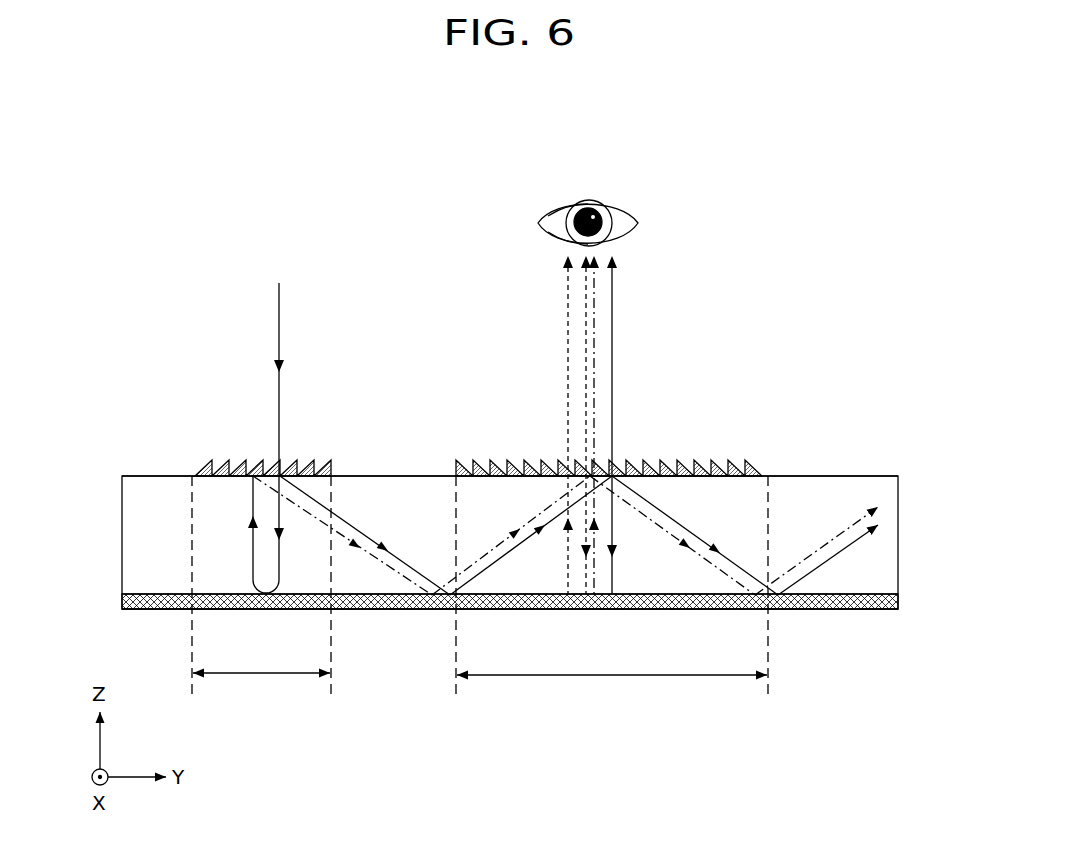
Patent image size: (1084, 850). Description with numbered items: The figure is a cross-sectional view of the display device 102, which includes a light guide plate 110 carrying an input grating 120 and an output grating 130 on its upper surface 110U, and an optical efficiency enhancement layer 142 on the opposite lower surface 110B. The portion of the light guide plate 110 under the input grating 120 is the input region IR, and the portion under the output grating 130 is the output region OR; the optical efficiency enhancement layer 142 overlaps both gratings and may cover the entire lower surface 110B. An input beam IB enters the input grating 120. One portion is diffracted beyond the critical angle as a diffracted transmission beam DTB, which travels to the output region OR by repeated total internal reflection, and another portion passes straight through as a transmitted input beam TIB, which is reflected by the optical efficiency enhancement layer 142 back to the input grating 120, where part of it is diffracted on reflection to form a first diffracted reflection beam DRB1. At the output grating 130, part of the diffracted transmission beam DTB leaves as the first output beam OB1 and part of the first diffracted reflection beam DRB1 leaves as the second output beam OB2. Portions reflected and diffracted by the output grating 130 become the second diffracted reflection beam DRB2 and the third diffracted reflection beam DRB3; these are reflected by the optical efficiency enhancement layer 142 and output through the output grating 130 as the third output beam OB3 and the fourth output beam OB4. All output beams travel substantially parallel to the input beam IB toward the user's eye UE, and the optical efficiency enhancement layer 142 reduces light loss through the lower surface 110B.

The display device 102 is at (810, 157).
The light guide plate 110 is at (900, 562).
The upper surface 110U is at (826, 475).
The lower surface 110B is at (822, 610).
The input grating 120 is at (192, 459).
The output grating 130 is at (452, 459).
The optical efficiency enhancement layer 142 is at (124, 602).
The user's eye UE is at (636, 198).
The input beam IB is at (278, 327).
The transmitted input beam TIB is at (252, 568).
The diffracted transmission beam DTB is at (403, 563).
The first diffracted reflection beam DRB1 is at (373, 562).
The second diffracted reflection beam DRB2 is at (610, 570).
The third diffracted reflection beam DRB3 is at (568, 570).
The first output beam OB1 is at (613, 340).
The second output beam OB2 is at (587, 301).
The third output beam OB3 is at (594, 359).
The fourth output beam OB4 is at (567, 317).
The input region IR is at (261, 689).
The output region OR is at (612, 689).